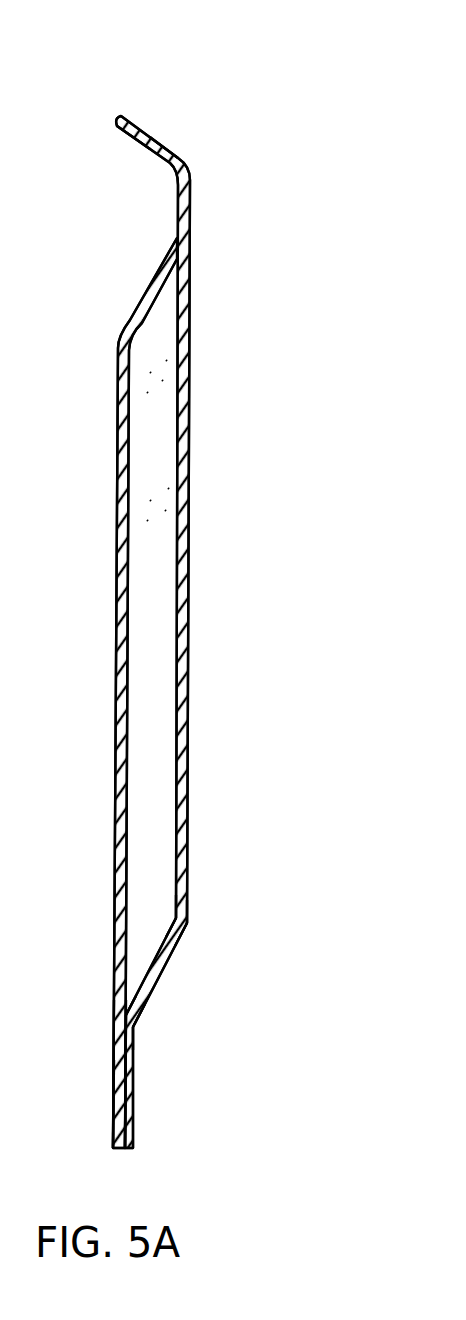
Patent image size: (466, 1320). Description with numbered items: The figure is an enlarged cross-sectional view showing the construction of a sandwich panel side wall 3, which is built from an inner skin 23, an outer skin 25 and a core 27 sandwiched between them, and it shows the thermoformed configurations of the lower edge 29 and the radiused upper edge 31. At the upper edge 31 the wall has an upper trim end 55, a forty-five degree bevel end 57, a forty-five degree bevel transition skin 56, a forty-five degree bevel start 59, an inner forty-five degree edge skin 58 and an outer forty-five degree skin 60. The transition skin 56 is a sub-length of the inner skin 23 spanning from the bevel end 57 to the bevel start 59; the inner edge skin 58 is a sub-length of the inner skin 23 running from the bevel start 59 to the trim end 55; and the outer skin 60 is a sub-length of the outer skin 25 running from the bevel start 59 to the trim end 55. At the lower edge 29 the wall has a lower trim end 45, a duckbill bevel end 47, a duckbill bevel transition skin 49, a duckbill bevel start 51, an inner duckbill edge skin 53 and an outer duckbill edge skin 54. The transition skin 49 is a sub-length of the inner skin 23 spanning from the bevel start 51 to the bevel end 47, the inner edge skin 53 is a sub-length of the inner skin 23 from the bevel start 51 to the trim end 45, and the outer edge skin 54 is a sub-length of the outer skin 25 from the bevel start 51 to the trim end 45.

The upper trim end 55 is at (123, 120).
The radiused upper edge 31 is at (168, 148).
The outer forty-five degree skin 60 is at (185, 170).
The inner forty-five degree edge skin 58 is at (140, 140).
The forty-five degree bevel start 59 is at (173, 173).
The forty-five degree bevel transition skin 56 is at (143, 290).
The forty-five degree bevel end 57 is at (120, 335).
The side wall 3 is at (157, 372).
The core 27 is at (157, 498).
The outer skin 25 is at (190, 587).
The inner skin 23 is at (118, 648).
The duckbill bevel end 47 is at (185, 930).
The duckbill bevel transition skin 49 is at (163, 970).
The duckbill bevel start 51 is at (133, 1023).
The outer duckbill edge skin 54 is at (115, 1048).
The inner duckbill edge skin 53 is at (135, 1090).
The lower edge 29 is at (117, 1075).
The lower trim end 45 is at (125, 1147).